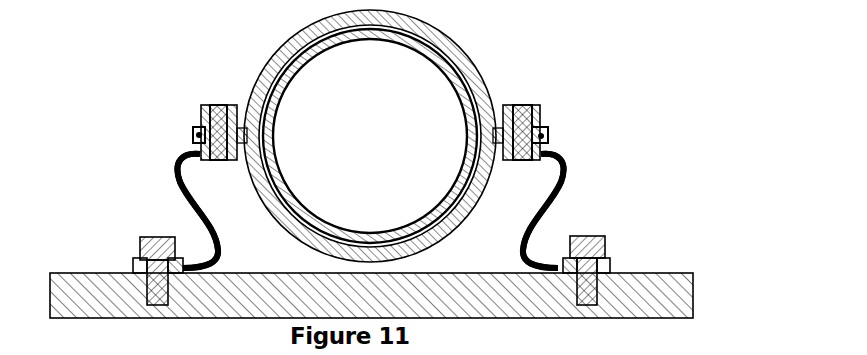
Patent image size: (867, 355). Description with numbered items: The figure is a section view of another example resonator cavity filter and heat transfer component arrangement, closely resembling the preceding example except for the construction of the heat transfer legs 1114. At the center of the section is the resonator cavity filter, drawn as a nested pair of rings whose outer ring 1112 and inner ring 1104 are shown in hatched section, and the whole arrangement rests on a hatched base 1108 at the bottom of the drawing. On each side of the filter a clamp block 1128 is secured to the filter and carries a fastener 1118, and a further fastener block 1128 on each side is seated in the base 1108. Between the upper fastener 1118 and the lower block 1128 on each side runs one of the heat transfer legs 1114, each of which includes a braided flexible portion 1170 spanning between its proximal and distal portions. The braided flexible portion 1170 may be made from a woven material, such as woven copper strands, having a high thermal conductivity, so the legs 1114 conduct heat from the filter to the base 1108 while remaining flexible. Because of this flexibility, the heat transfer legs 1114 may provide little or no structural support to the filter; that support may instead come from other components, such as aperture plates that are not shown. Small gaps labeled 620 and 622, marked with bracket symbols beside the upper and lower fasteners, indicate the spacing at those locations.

The inner pipe / liner 1104 is at (332, 136).
The outer pipe / jacket 1112 is at (345, 136).
The base / support surface 1108 is at (399, 306).
The fastener / clamp block 1128 is at (375, 170).
The fastener / pin 1118 is at (392, 100).
The heat transfer legs 1114 is at (396, 205).
The braided flexible portion 1170 is at (398, 211).
The gap / spacing 620 is at (137, 152).
The gap / spacing 622 is at (103, 265).